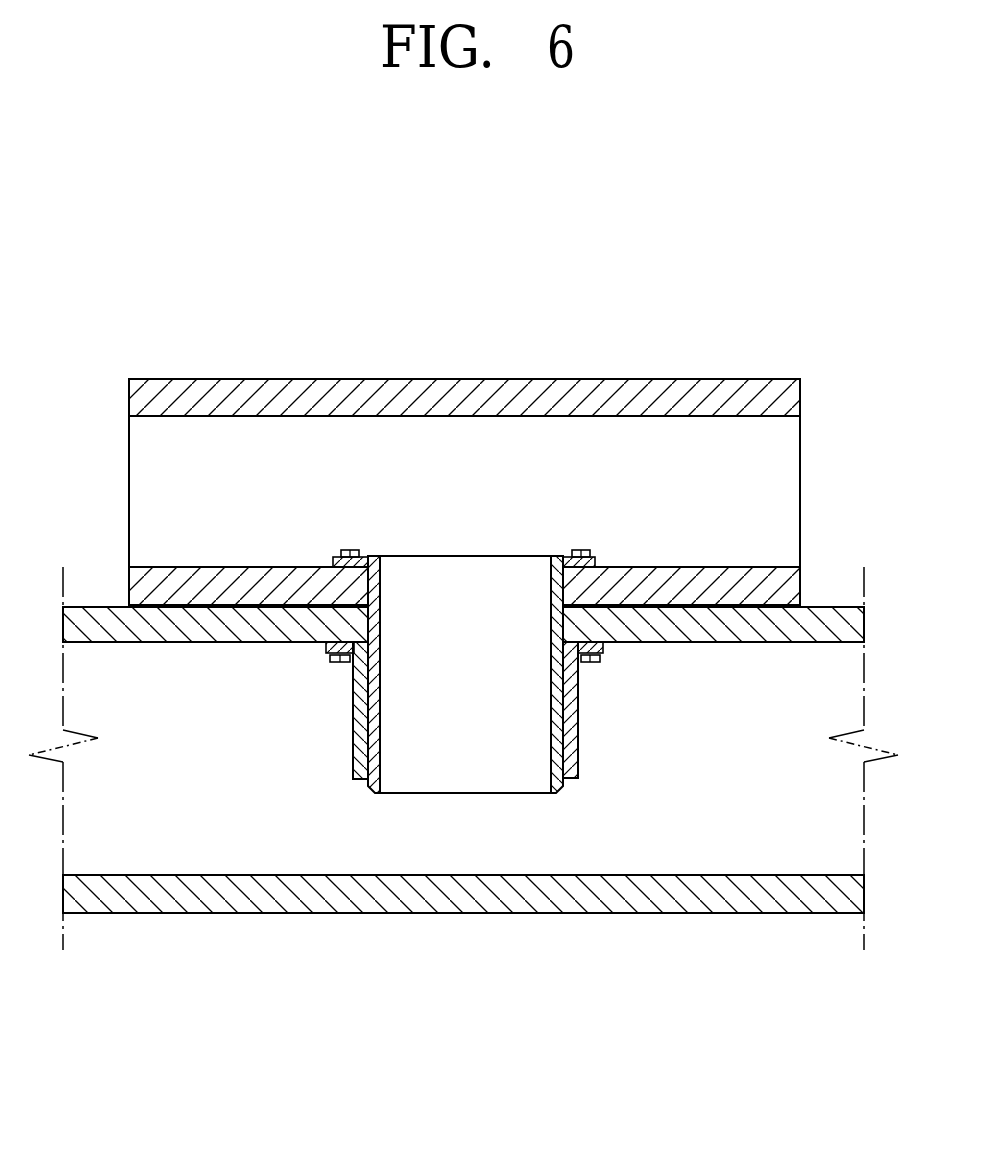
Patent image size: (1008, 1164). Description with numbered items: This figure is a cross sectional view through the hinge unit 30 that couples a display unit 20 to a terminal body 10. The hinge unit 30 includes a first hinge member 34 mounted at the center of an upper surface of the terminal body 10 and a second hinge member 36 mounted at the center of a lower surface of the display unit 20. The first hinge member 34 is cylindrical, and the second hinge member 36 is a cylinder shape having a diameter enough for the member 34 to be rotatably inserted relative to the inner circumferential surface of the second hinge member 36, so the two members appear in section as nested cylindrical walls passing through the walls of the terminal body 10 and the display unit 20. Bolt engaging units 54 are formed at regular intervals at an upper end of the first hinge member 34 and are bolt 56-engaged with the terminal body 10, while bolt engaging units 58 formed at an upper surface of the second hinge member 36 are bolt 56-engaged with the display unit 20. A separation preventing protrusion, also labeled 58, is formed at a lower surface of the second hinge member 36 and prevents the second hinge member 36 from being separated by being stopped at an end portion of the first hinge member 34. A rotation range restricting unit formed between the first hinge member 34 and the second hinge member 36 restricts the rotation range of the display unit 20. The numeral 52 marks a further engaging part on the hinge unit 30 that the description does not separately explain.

The terminal body 10 is at (478, 897).
The display unit 20 is at (677, 396).
The hinge unit 30 is at (465, 763).
The first hinge member 34 is at (578, 708).
The second hinge member 36 is at (572, 745).
The lower right fastening flange 52 is at (603, 658).
The bolt engaging unit 54 is at (327, 652).
The bolt 56 is at (592, 552).
The bolt engaging unit 58 is at (338, 553).